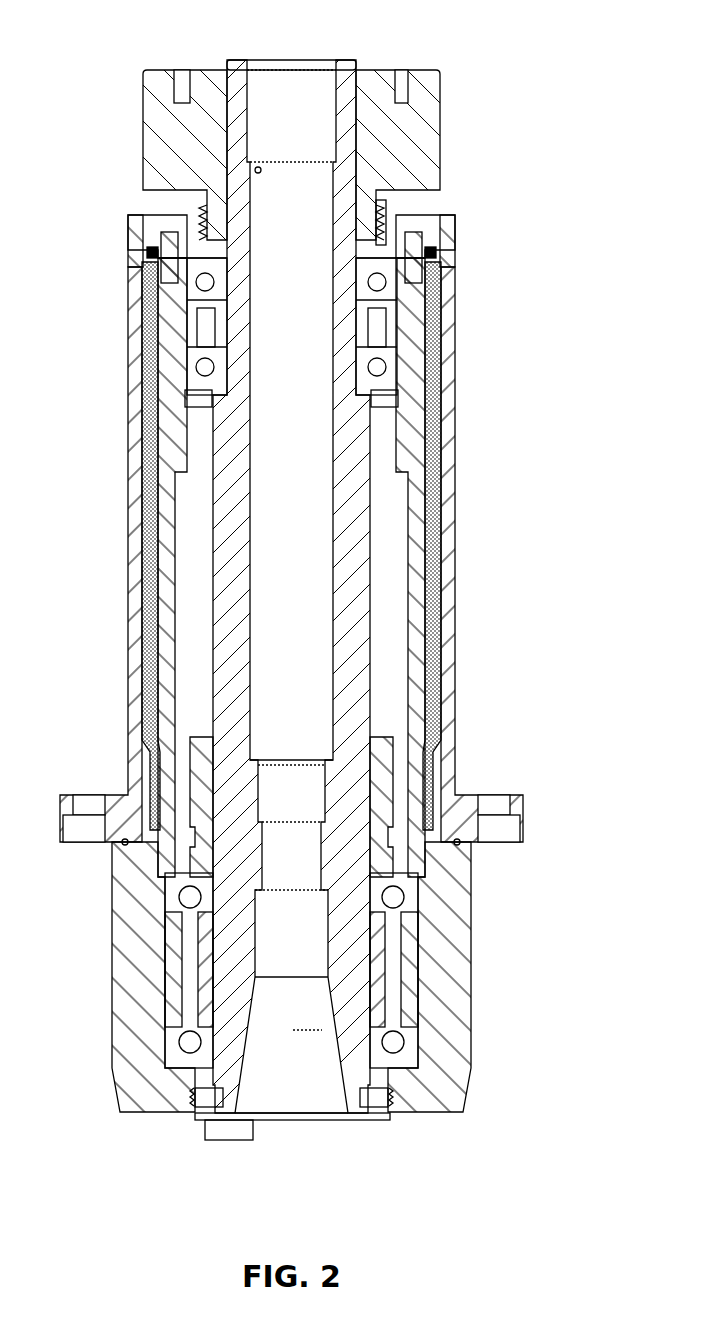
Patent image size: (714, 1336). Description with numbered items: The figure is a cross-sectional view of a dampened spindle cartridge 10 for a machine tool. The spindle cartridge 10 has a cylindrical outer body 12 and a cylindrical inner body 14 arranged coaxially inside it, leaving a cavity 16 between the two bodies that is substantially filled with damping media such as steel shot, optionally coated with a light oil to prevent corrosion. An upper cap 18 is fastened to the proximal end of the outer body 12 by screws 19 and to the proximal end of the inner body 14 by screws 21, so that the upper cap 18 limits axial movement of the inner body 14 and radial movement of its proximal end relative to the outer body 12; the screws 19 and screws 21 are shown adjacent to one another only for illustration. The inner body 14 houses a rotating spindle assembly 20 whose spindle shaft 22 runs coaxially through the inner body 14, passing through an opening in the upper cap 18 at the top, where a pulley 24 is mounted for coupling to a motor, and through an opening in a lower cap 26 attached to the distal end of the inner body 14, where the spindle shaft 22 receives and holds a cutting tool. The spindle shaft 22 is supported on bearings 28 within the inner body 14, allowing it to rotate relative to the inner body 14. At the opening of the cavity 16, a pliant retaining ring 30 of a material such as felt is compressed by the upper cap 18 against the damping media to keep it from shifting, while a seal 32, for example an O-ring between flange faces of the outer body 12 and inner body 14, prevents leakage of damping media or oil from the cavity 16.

The spindle cartridge 10 is at (495, 14).
The cylindrical outer body 12 is at (410, 455).
The cylindrical inner body 14 is at (464, 513).
The cavity 16 is at (437, 597).
The upper cap 18 is at (398, 202).
The screws 19 is at (455, 233).
The rotating spindle assembly 20 is at (243, 1164).
The screws 21 is at (430, 213).
The spindle shaft 22 is at (240, 63).
The pulley 24 is at (172, 118).
The lower cap 26 is at (440, 1090).
The bearings 28 is at (205, 282).
The retaining ring 30 is at (449, 257).
The seal 32 is at (458, 845).